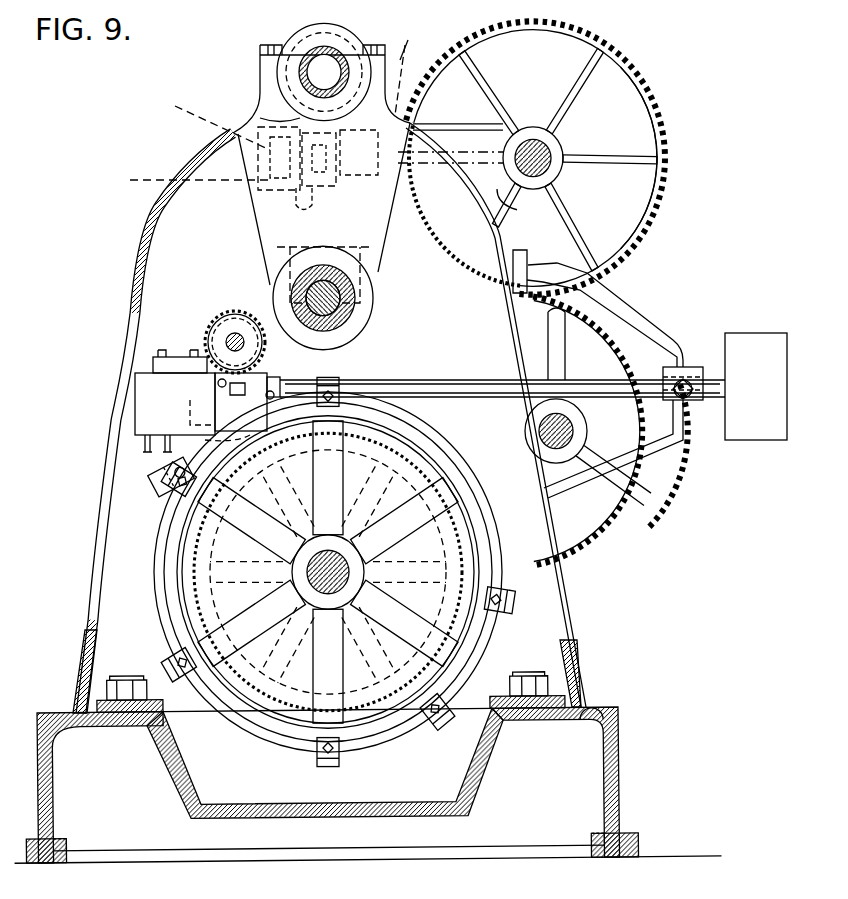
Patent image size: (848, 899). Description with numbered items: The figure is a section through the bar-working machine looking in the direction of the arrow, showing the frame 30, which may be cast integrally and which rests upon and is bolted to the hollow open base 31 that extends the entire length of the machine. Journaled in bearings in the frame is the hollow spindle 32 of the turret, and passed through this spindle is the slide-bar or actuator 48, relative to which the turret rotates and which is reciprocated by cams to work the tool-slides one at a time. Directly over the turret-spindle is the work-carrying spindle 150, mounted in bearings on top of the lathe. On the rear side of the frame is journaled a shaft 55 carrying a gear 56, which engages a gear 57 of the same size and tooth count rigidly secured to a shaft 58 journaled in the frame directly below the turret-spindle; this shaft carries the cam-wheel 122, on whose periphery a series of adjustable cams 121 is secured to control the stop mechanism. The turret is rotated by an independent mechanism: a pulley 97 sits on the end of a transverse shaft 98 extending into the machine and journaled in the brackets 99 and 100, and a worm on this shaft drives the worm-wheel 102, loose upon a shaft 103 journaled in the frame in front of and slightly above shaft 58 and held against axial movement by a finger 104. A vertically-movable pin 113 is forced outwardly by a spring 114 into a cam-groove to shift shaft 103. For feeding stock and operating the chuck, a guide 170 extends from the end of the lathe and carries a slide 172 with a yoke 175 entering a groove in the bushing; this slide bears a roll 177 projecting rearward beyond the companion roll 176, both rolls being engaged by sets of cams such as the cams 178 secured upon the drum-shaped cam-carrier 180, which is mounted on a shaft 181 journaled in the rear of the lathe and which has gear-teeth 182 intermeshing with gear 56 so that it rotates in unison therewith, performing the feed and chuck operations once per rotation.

The frame 30 is at (580, 652).
The hollow open base 31 is at (620, 754).
The hollow spindle 32 is at (352, 306).
The slide-bar or actuator 48 is at (300, 288).
The shaft 55 is at (578, 431).
The gear 56 is at (606, 568).
The gear 57 is at (245, 715).
The shaft 58 is at (300, 572).
The pulley 97 is at (752, 345).
The transverse shaft 98 is at (592, 387).
The bracket 99 is at (684, 468).
The bracket 100 is at (135, 392).
The worm-wheel 102 is at (215, 325).
The shaft 103 is at (245, 344).
The finger 104 is at (170, 357).
The vertically-movable pin 113 is at (190, 403).
The spring 114 is at (160, 462).
The cams 121 is at (338, 380).
The carrier or cam-wheel 122 is at (383, 748).
The spindle 150 is at (282, 58).
The guide 170 is at (200, 147).
The slide 172 is at (192, 138).
The yoke 175 is at (270, 117).
The roll 176 is at (411, 120).
The roll 177 is at (398, 80).
The cams 178 is at (317, 206).
The cam-carrier 180 is at (664, 118).
The shaft 181 is at (548, 152).
The gear-teeth 182 is at (668, 222).